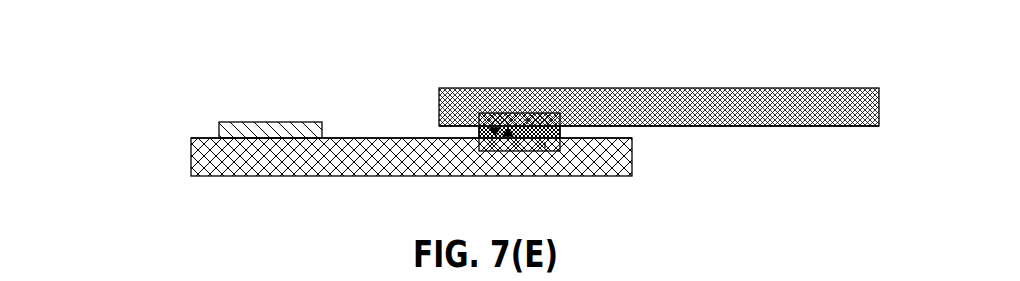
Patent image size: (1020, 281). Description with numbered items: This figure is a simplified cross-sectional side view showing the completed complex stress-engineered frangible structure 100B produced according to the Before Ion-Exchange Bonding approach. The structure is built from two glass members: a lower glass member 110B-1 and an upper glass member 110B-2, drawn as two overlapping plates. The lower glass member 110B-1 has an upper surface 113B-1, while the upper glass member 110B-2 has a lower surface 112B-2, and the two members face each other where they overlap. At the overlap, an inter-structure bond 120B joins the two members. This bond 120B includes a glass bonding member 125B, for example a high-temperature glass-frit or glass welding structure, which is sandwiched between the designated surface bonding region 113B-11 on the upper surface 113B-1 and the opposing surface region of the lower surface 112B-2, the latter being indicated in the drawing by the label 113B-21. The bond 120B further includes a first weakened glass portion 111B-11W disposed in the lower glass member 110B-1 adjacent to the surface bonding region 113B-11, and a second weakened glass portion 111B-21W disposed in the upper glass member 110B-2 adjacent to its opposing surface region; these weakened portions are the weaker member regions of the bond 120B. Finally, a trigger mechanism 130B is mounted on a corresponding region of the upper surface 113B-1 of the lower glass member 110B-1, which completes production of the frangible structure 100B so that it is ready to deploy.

The complex stress-engineered frangible structure 100B is at (160, 62).
The glass member 110B-1 is at (185, 152).
The glass member 110B-2 is at (434, 83).
The lower surface 112B-2 is at (821, 129).
The upper surface 113B-1 is at (369, 133).
The designated surface bonding region 113B-11 is at (495, 128).
The contact region of second substrate surface 113B-21 is at (508, 136).
The inter-structure bond 120B is at (603, 75).
The glass bonding member 125B is at (536, 127).
The second weakened glass portion 111B-21W is at (527, 123).
The first weakened glass portion 111B-11W is at (545, 148).
The trigger mechanism 130B is at (257, 132).